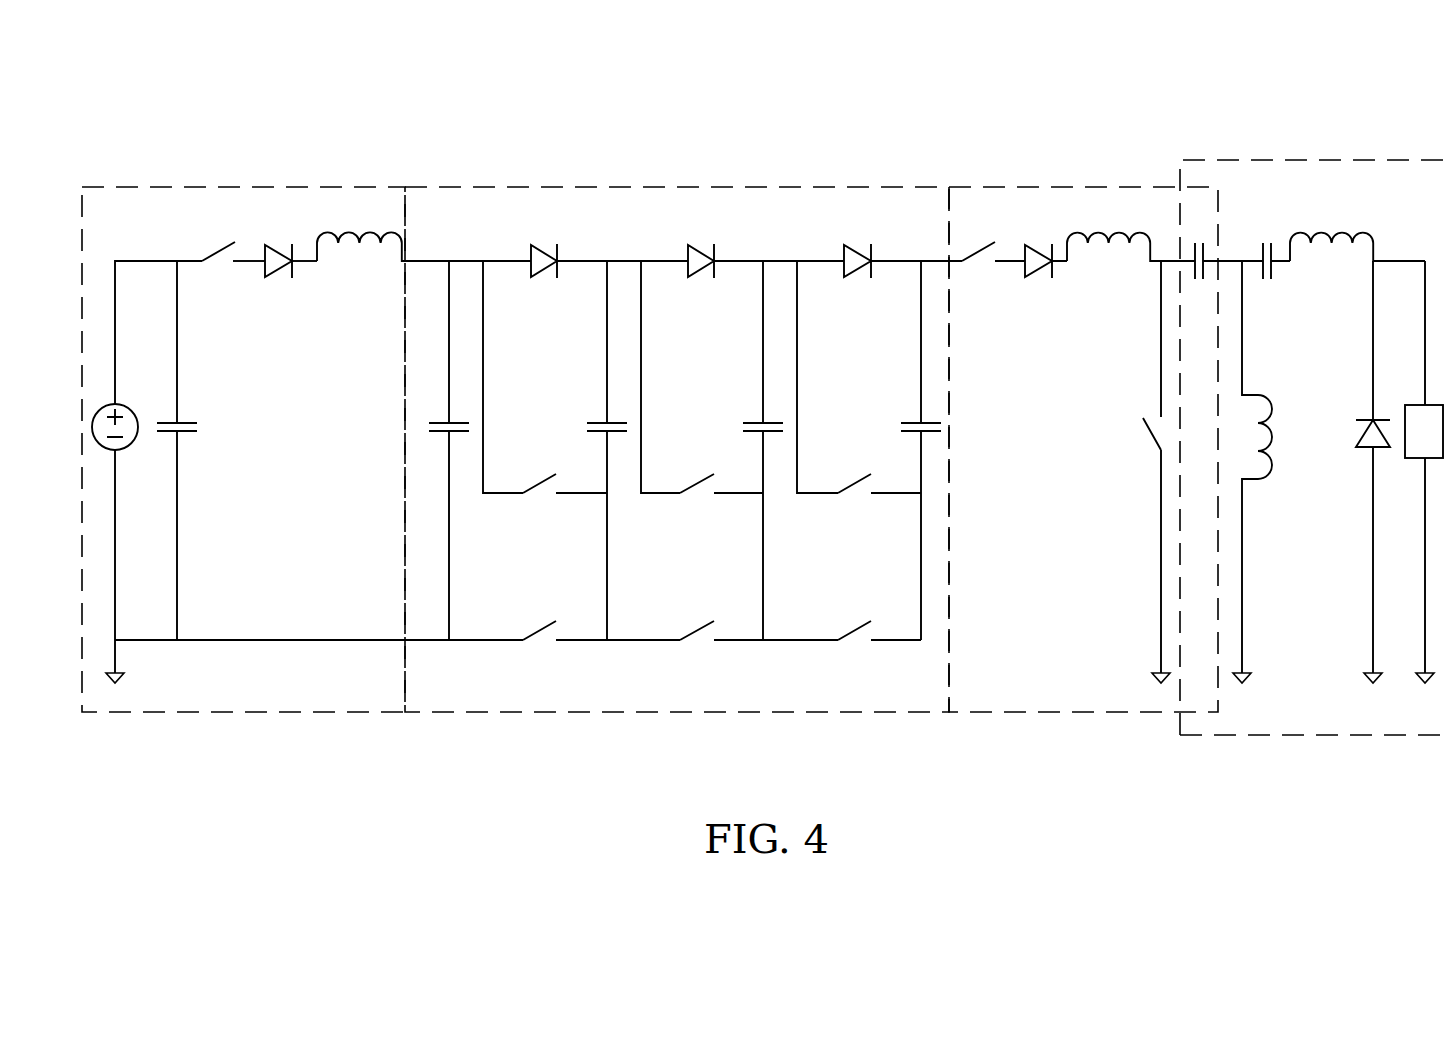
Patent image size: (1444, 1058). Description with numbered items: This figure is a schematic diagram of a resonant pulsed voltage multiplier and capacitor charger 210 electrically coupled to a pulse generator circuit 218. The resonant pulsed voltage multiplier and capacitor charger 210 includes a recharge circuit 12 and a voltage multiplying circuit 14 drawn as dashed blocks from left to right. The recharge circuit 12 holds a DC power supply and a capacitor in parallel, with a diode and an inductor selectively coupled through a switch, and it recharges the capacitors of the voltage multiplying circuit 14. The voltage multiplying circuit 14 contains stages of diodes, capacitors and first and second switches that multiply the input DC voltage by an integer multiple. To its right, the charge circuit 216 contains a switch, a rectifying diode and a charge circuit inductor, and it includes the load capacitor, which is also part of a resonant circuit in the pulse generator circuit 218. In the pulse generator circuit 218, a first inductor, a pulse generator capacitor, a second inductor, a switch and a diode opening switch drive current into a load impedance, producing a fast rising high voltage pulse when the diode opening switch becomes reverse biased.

The resonant pulsed voltage multiplier and capacitor charger 210 is at (1160, 62).
The recharge circuit 12 is at (287, 187).
The voltage multiplying circuit 14 is at (730, 187).
The charge circuit 216 is at (1010, 187).
The pulse generator circuit 218 is at (1317, 160).